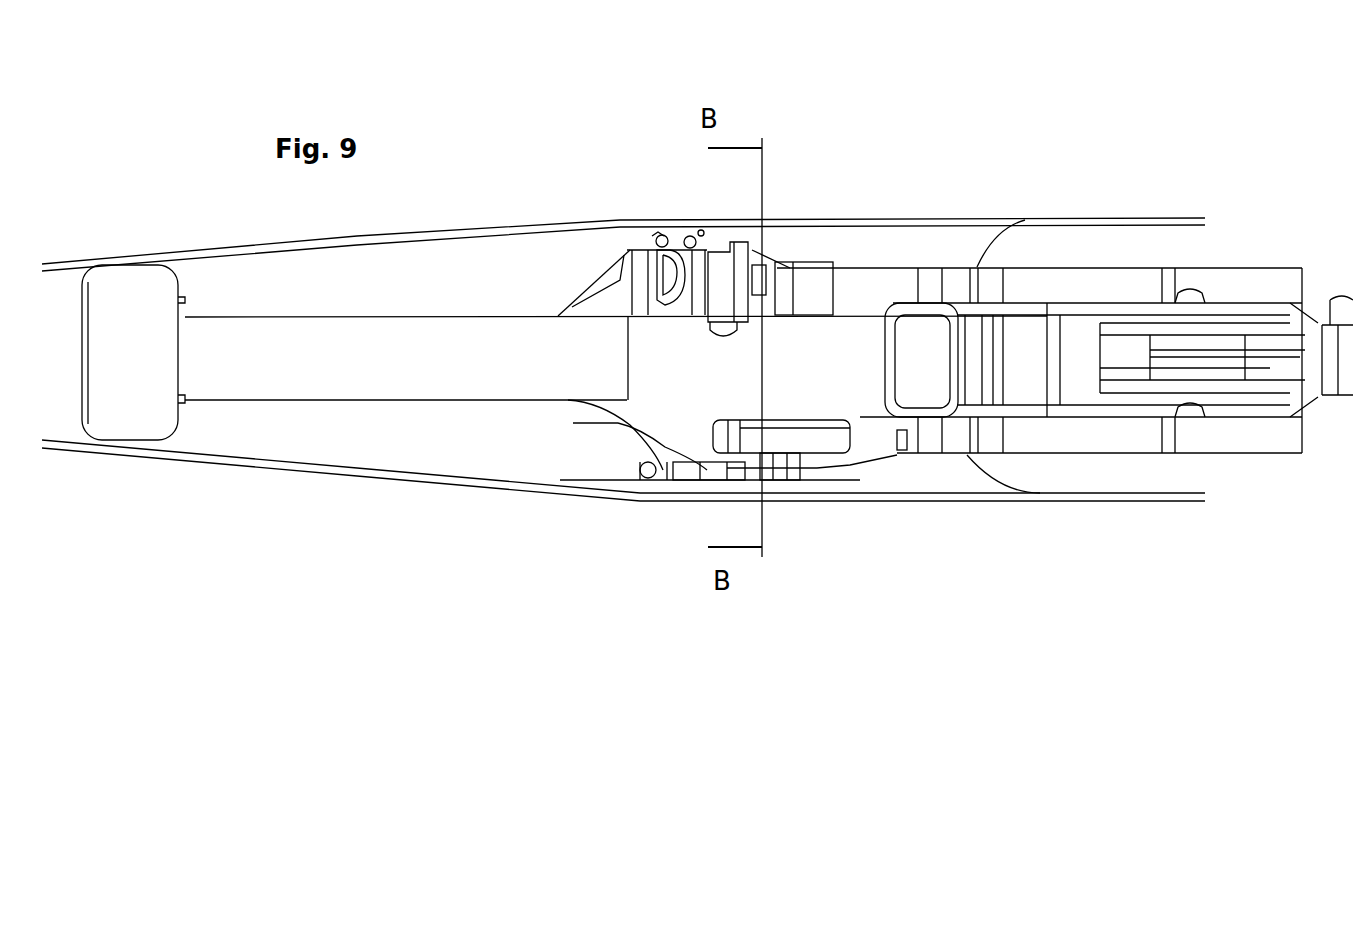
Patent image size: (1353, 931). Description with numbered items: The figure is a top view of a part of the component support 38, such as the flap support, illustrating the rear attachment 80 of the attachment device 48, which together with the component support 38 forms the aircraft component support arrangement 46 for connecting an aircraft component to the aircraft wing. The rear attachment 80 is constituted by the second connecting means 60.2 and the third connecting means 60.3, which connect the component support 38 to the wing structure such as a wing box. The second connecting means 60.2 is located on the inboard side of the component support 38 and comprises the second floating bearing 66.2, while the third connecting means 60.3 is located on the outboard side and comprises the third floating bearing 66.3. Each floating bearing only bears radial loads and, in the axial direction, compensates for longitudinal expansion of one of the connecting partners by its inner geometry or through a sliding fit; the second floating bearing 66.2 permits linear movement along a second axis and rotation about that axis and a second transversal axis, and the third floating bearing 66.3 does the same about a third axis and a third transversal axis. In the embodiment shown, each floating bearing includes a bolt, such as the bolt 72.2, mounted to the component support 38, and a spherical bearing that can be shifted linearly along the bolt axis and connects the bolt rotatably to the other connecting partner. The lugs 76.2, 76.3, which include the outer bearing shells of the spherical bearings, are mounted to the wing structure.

The component support 38 is at (252, 447).
The aircraft component support arrangement 46 is at (847, 155).
The attachment device 48 is at (1081, 516).
The rear attachment 80 is at (830, 528).
The second connecting means 60.2 is at (664, 236).
The third connecting means 60.3 is at (735, 477).
The second floating bearing 66.2 is at (688, 236).
The third floating bearing 66.3 is at (823, 465).
The bolt 72.2 is at (652, 252).
The lug 76.2 is at (737, 247).
The lug 76.3 is at (783, 443).